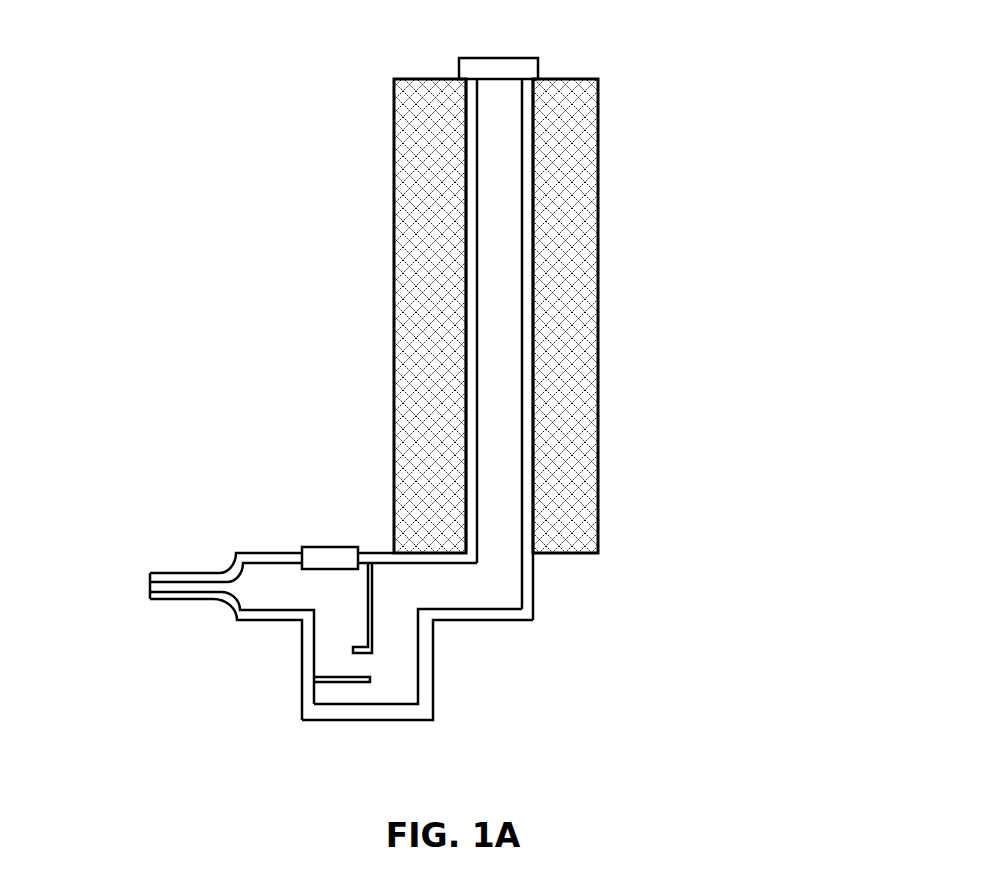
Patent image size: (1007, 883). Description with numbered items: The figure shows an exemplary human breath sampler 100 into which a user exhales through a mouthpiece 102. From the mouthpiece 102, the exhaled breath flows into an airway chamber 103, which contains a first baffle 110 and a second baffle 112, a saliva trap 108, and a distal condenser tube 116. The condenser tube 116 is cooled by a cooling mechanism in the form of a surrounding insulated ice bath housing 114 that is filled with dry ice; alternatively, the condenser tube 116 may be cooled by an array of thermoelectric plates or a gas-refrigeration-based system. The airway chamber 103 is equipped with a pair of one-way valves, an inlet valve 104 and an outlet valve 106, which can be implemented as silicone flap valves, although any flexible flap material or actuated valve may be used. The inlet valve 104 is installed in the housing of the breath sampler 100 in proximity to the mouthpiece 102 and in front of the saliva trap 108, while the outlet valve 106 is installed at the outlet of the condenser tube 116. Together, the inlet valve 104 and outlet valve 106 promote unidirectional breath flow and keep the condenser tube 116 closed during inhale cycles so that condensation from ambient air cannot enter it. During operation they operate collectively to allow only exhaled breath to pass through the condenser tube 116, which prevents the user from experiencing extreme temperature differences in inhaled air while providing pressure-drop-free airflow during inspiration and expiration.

The human breath sampler 100 is at (127, 334).
The mouthpiece 102 is at (177, 572).
The airway chamber 103 is at (258, 594).
The inlet valve 104 is at (330, 548).
The outlet valve 106 is at (480, 58).
The saliva trap 108 is at (408, 696).
The baffle 110 is at (367, 629).
The baffle 112 is at (346, 683).
The ice bath housing 114 is at (393, 237).
The condenser tube 116 is at (525, 152).